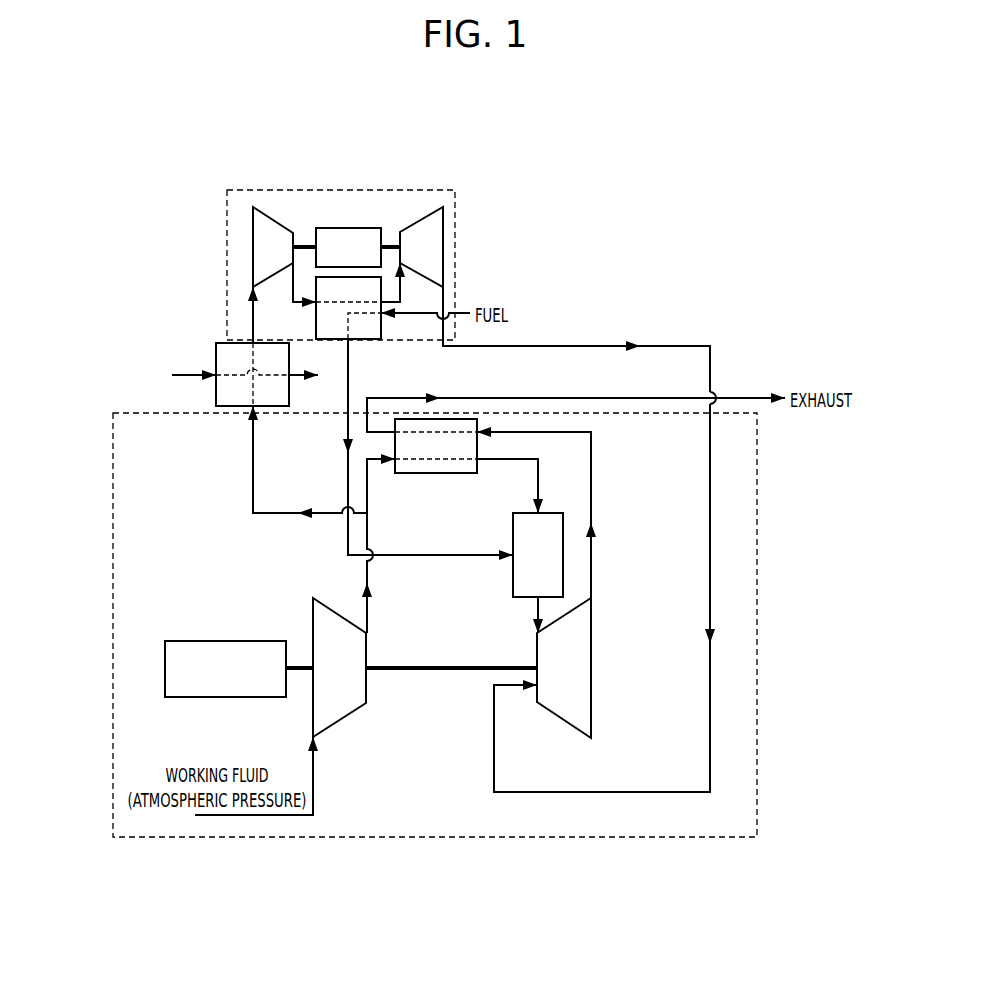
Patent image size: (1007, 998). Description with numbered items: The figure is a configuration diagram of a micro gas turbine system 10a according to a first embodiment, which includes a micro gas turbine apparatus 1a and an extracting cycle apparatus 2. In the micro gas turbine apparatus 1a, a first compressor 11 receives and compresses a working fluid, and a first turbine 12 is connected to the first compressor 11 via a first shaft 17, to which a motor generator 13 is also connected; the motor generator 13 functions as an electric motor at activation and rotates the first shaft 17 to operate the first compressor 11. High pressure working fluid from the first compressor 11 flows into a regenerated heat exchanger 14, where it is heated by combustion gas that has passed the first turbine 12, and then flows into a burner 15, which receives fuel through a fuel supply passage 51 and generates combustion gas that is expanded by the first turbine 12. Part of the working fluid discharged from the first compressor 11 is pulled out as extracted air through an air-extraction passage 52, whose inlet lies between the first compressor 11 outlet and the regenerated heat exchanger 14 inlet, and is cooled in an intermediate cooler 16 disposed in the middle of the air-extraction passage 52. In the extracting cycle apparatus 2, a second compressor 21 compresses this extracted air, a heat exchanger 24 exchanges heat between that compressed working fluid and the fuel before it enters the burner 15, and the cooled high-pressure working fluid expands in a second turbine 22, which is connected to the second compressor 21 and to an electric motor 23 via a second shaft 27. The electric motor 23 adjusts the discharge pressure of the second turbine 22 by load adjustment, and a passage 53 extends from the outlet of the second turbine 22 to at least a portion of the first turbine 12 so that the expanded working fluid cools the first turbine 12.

The micro gas turbine system 10a is at (663, 202).
The micro gas turbine apparatus 1a is at (113, 468).
The extracting cycle apparatus 2 is at (227, 225).
The second compressor 21 is at (269, 236).
The second turbine 22 is at (420, 230).
The electric motor 23 is at (347, 235).
The heat exchanger 24 is at (330, 322).
The second shaft 27 is at (308, 245).
The intermediate cooler 16 is at (232, 362).
The regenerated heat exchanger 14 is at (433, 465).
The burner 15 is at (527, 567).
The motor generator 13 is at (228, 657).
The first compressor 11 is at (345, 698).
The first turbine 12 is at (572, 690).
The first shaft 17 is at (428, 670).
The fuel supply passage 51 is at (348, 541).
The air-extraction passage 52 is at (253, 468).
The passage 53 is at (710, 562).